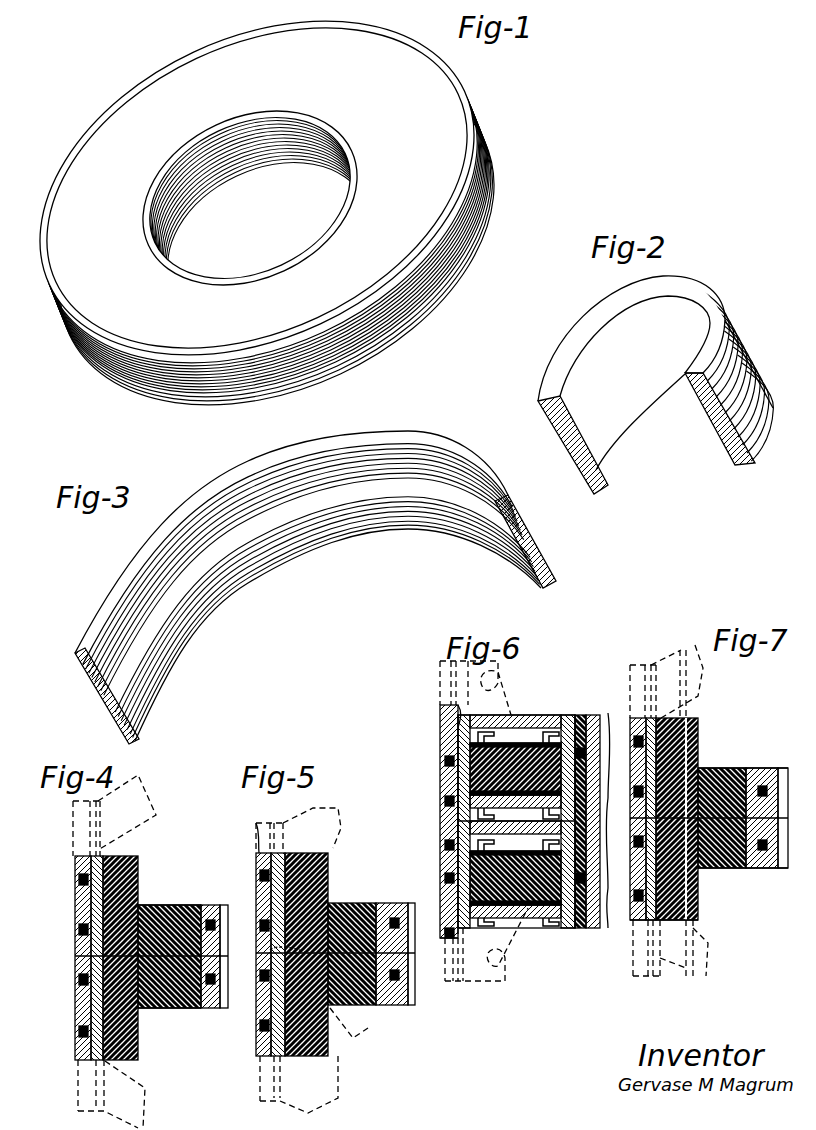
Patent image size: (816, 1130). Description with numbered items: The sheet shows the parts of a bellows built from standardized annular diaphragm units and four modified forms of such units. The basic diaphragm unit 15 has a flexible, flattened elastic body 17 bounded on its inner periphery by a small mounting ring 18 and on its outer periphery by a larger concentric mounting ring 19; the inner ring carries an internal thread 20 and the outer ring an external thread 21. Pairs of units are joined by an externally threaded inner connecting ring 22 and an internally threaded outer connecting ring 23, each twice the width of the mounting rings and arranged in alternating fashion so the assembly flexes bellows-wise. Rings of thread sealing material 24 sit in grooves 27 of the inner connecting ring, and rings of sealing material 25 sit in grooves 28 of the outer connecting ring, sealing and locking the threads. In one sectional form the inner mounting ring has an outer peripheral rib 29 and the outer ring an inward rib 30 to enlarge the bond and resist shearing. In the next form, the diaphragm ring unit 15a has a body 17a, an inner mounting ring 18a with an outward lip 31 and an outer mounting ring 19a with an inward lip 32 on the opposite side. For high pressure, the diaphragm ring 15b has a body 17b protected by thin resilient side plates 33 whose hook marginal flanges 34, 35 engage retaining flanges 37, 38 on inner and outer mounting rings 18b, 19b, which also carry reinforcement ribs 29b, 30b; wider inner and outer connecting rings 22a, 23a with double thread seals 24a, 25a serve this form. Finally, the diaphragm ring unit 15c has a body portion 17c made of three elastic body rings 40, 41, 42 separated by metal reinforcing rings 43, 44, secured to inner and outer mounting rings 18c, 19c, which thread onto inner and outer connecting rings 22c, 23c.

In FIG. 1, the diaphragm unit 15 is at (462, 150).
In FIG. 4, the diaphragm unit 15 is at (140, 840).
In FIG. 1, the body 17 is at (385, 47).
In FIG. 4, the body 17 is at (128, 1050).
In FIG. 1, the inner mounting ring 18 is at (345, 158).
In FIG. 4, the inner mounting ring 18 is at (180, 905).
In FIG. 1, the outer mounting ring 19 is at (443, 252).
In FIG. 4, the outer mounting ring 19 is at (82, 1020).
In FIG. 1, the internal thread 20 is at (259, 158).
In FIG. 1, the external thread 21 is at (404, 298).
In FIG. 2, the inner connecting ring 22 is at (700, 287).
In FIG. 4, the inner connecting ring 22 is at (214, 900).
In FIG. 5, the inner connecting ring 22 is at (386, 997).
In FIG. 3, the outer connecting ring 23 is at (455, 456).
In FIG. 4, the outer connecting ring 23 is at (80, 912).
In FIG. 5, the outer connecting ring 23 is at (262, 1040).
In FIG. 2, the thread sealing material 24 is at (725, 423).
In FIG. 4, the thread sealing material 24 is at (208, 925).
In FIG. 5, the thread sealing material 24 is at (406, 980).
In FIG. 3, the thread sealing material 25 is at (522, 562).
In FIG. 4, the thread sealing material 25 is at (70, 871).
In FIG. 5, the thread sealing material 25 is at (255, 985).
In FIG. 2, the grooves 27 is at (694, 375).
In FIG. 3, the grooves 28 is at (518, 560).
In FIG. 4, the outer peripheral rib 29 is at (172, 898).
In FIG. 4, the bonding and reinforcing rib 30 is at (82, 962).
In FIG. 5, the lip 31 is at (352, 896).
In FIG. 5, the bonding and reinforcing lip 32 is at (282, 843).
In FIG. 6, the side plates 33 is at (486, 722).
In FIG. 6, the hook marginal flange 34 is at (590, 712).
In FIG. 6, the hook marginal flange 35 is at (450, 720).
In FIG. 6, the retaining flange 37 is at (530, 712).
In FIG. 6, the retaining flange 38 is at (486, 707).
In FIG. 7, the elastic body ring 40 is at (714, 760).
In FIG. 7, the elastic body ring 41 is at (695, 862).
In FIG. 7, the elastic body ring 42 is at (655, 710).
In FIG. 7, the reinforcing ring 43 is at (712, 862).
In FIG. 7, the reinforcing ring 44 is at (680, 912).
In FIG. 5, the diaphragm ring unit 15a is at (332, 1012).
In FIG. 5, the body 17a is at (325, 896).
In FIG. 5, the inner mounting ring 18a is at (372, 896).
In FIG. 5, the outer mounting ring 19a is at (275, 818).
In FIG. 5, the reinforcement rib 30b is at (400, 905).
In FIG. 6, the reinforcement rib 30b is at (448, 930).
In FIG. 6, the diaphragm ring 15b is at (555, 707).
In FIG. 6, the body 17b is at (505, 735).
In FIG. 6, the inner mounting ring 18b is at (570, 707).
In FIG. 6, the outer mounting ring 19b is at (445, 700).
In FIG. 6, the inner connecting ring 22a is at (600, 880).
In FIG. 6, the outer connecting ring 23a is at (432, 742).
In FIG. 6, the double thread seal 24a is at (577, 746).
In FIG. 6, the double thread seal 25a is at (440, 840).
In FIG. 6, the reinforcement rib 29b is at (548, 910).
In FIG. 7, the diaphragm ring unit 15c is at (707, 732).
In FIG. 7, the body portion 17c is at (726, 760).
In FIG. 7, the inner mounting ring 18c is at (752, 762).
In FIG. 7, the outer mounting ring 19c is at (640, 920).
In FIG. 7, the inner connecting ring 22c is at (765, 860).
In FIG. 7, the outer connecting ring 23c is at (626, 838).